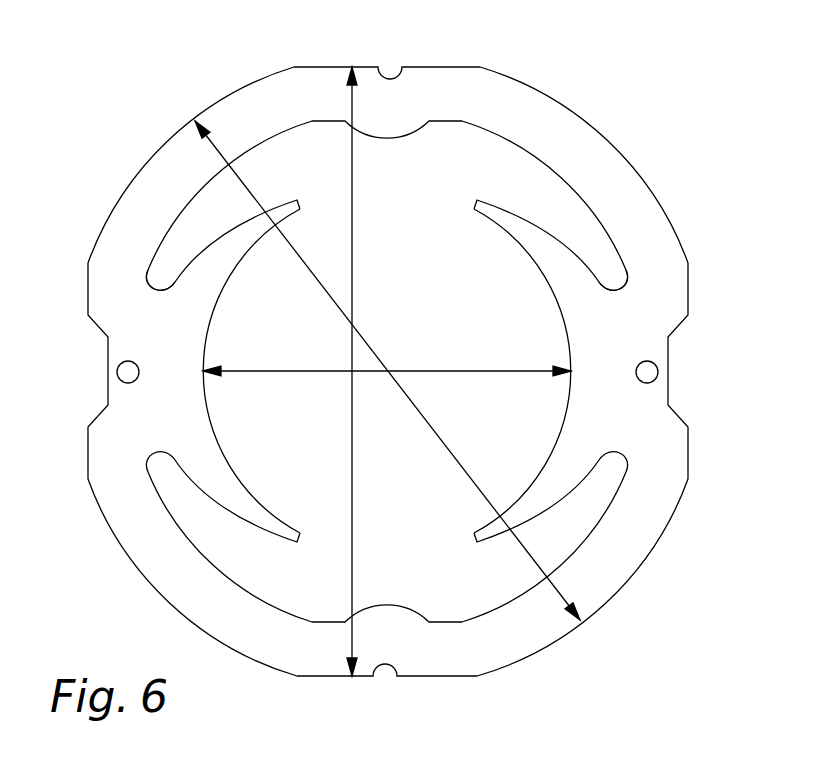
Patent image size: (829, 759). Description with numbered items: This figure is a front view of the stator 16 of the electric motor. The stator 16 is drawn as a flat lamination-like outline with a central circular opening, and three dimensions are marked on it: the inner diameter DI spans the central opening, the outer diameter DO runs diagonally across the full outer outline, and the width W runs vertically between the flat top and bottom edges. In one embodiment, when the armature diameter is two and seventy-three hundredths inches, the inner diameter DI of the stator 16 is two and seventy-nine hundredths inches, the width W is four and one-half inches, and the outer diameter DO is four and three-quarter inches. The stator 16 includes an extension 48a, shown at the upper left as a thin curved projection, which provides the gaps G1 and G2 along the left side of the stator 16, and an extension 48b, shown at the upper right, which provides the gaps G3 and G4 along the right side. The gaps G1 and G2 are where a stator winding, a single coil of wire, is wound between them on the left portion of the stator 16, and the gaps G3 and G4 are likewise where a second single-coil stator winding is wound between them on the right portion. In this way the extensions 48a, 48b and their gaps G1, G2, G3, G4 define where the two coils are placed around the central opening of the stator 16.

The stator lamination 16 is at (473, 67).
The extension 48a is at (297, 199).
The extension 48b is at (477, 199).
The gap G1 is at (148, 277).
The gap G2 is at (148, 465).
The gap G3 is at (614, 278).
The gap G4 is at (614, 467).
The width of the stator W is at (353, 297).
The inner diameter of the stator DI is at (447, 370).
The outer diameter of the stator DO is at (440, 432).